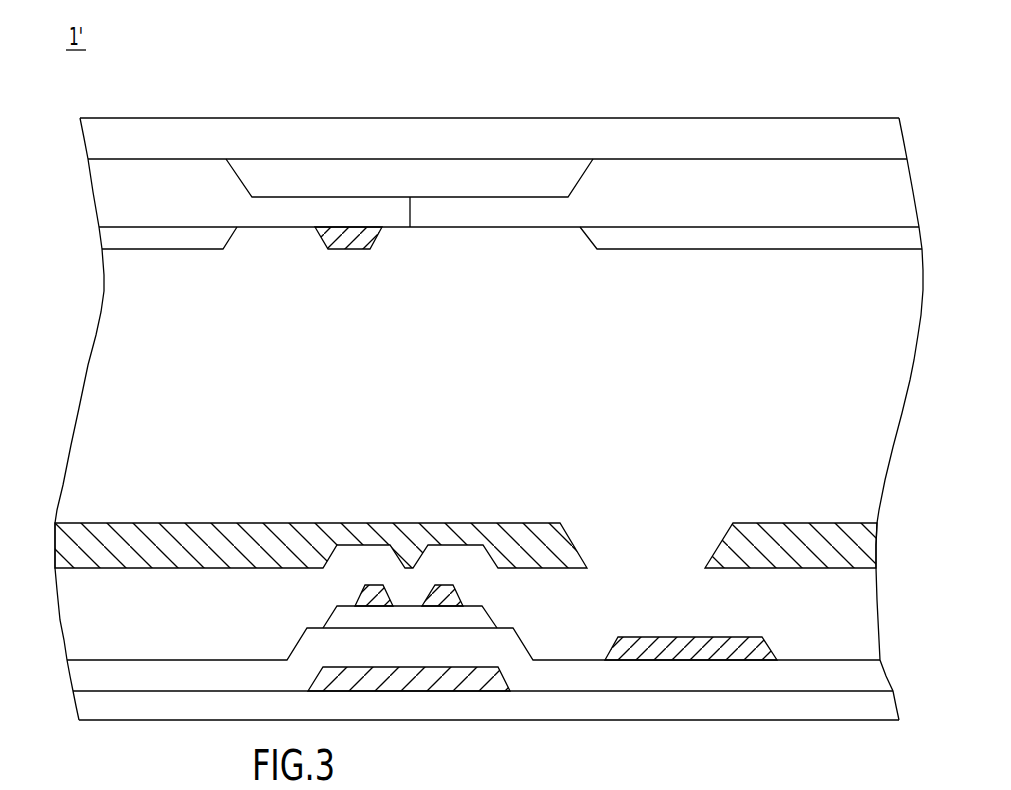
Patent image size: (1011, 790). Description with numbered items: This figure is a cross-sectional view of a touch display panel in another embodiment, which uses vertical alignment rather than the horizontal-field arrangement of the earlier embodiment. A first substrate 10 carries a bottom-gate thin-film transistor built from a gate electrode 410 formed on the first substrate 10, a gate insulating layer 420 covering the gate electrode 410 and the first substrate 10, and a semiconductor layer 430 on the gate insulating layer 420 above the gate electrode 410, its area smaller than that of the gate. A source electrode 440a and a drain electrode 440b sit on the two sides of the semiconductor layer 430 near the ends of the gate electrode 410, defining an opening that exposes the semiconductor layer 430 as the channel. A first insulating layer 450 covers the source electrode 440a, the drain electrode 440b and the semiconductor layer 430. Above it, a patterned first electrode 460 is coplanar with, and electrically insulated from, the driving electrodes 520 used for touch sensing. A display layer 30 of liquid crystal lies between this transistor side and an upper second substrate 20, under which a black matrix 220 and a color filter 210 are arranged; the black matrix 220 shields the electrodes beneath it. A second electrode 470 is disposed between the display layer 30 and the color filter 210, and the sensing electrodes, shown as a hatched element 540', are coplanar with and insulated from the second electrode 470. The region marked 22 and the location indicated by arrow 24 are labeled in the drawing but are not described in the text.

The first substrate 10 is at (872, 706).
The second substrate 20 is at (880, 138).
The opening region 22 is at (478, 117).
The recess 24 is at (528, 160).
The display layer 30 is at (893, 338).
The color filter 210 is at (885, 190).
The black matrix 220 is at (557, 175).
The gate electrode 410 is at (457, 678).
The gate insulating layer 420 is at (865, 675).
The semiconductor layer 430 is at (472, 618).
The source electrode 440a is at (362, 592).
The drain electrode 440b is at (455, 592).
The first insulating layer 450 is at (857, 612).
The first electrode 460 is at (857, 543).
The second electrode 470 is at (198, 237).
The driving electrodes 520 is at (573, 548).
The spacer 540' is at (356, 270).